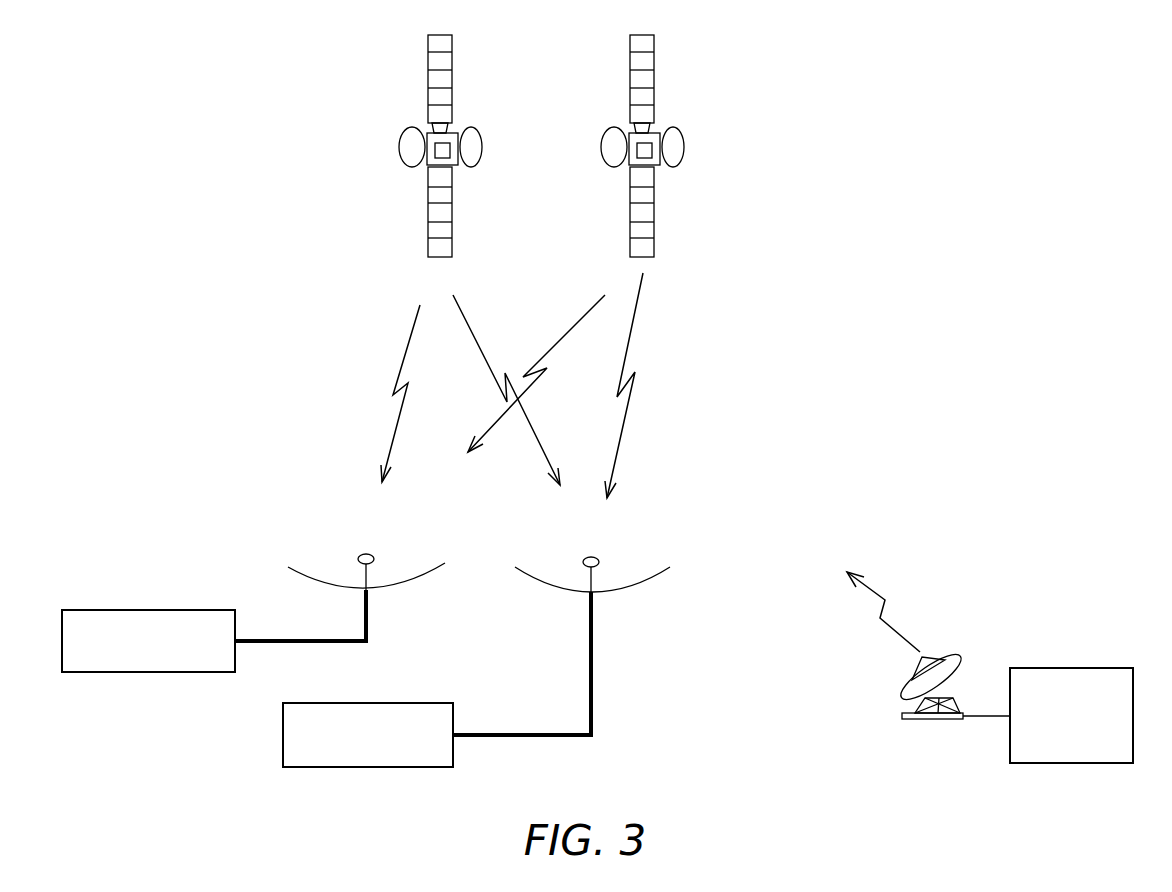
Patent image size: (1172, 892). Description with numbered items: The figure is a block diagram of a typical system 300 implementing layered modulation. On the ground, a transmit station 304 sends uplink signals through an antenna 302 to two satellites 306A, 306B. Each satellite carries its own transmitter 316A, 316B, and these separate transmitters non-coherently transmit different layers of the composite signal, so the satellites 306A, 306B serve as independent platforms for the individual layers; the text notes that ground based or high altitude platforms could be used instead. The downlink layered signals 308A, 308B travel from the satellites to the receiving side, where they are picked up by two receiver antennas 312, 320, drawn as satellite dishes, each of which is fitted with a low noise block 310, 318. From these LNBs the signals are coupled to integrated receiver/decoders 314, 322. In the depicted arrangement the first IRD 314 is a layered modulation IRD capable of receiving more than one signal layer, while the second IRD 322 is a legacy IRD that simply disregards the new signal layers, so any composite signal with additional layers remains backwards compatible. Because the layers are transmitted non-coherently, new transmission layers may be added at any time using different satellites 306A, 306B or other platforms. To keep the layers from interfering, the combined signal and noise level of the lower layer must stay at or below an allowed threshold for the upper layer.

The system 300 is at (865, 62).
The antenna 302 is at (938, 658).
The transmit station 304 is at (1072, 668).
The satellite 306A is at (408, 130).
The satellite 306B is at (685, 137).
The layered signal 308A is at (453, 295).
The layered signal 308B is at (643, 273).
The low noise block 310 is at (366, 552).
The receiver antenna 312 is at (303, 570).
The integrated receiver/decoder 314 is at (92, 672).
The transmitter 316A is at (445, 142).
The transmitter 316B is at (647, 145).
The low noise block 318 is at (593, 557).
The receiver antenna 320 is at (607, 592).
The integrated receiver/decoder 322 is at (390, 768).